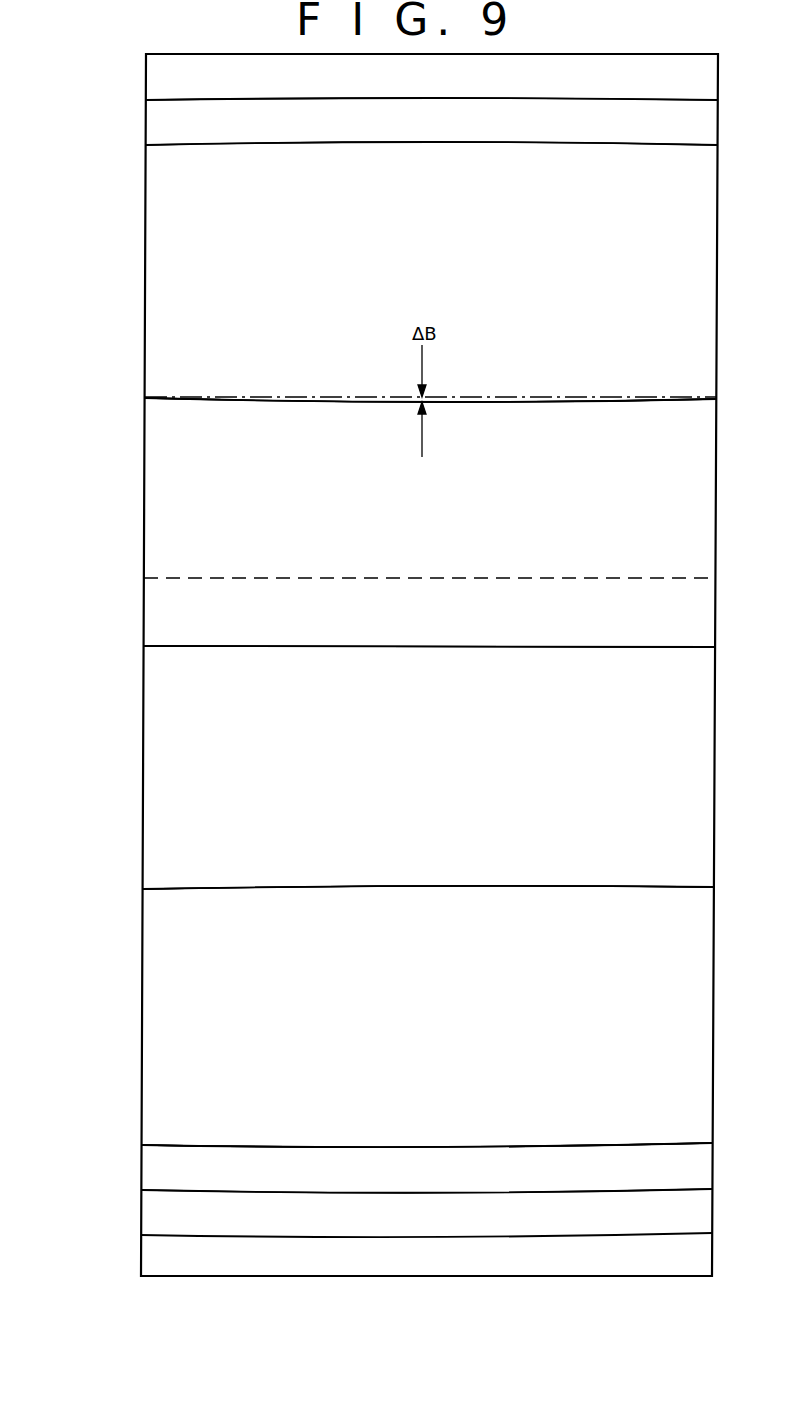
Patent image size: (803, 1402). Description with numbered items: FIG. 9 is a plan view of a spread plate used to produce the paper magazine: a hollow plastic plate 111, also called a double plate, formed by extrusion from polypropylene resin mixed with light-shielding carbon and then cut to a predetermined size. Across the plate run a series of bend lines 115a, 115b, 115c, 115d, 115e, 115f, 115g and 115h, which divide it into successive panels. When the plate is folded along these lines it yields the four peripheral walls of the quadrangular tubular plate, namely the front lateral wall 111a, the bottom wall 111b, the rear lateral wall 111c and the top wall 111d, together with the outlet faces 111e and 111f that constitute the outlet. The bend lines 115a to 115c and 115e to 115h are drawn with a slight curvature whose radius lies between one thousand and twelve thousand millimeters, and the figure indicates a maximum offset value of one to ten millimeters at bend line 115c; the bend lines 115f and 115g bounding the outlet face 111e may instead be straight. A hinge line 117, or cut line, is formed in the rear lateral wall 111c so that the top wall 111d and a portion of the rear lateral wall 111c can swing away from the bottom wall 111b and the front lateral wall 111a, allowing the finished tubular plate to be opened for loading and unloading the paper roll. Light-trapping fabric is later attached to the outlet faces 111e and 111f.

The hollow plastic plate 111 is at (146, 77).
The front lateral wall 111a is at (423, 1041).
The bottom wall 111b is at (427, 782).
The rear lateral wall 111c is at (428, 539).
The top wall 111d is at (430, 275).
The outlet face 111e is at (422, 1182).
The outlet face 111f is at (432, 91).
The bend line 115a is at (452, 100).
The bend line 115b is at (448, 145).
The bend line 115c is at (453, 405).
The bend line 115d is at (449, 647).
The bend line 115e is at (440, 887).
The bend line 115f is at (453, 1147).
The bend line 115g is at (451, 1193).
The bend line 115h is at (453, 1237).
The hinge line 117 is at (457, 577).